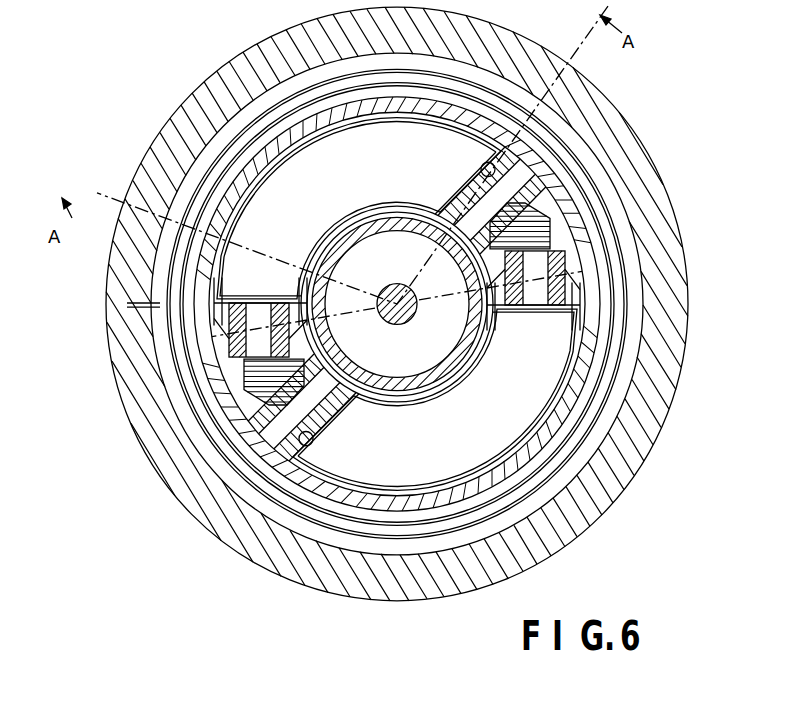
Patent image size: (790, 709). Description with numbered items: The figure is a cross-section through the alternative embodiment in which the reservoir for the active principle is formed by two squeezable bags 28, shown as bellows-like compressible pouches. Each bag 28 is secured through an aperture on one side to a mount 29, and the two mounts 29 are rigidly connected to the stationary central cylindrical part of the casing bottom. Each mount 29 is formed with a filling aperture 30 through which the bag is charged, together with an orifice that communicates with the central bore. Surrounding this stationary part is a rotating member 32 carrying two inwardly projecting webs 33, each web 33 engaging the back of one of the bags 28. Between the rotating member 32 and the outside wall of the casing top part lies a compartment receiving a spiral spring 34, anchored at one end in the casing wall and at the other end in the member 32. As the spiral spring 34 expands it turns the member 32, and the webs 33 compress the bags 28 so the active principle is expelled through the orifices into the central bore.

The bags 28 is at (500, 428).
The mount 29 is at (562, 262).
The filling aperture 30 is at (532, 210).
The rotating member 32 is at (582, 387).
The inwardly projecting webs 33 is at (455, 187).
The spiral spring 34 is at (463, 533).